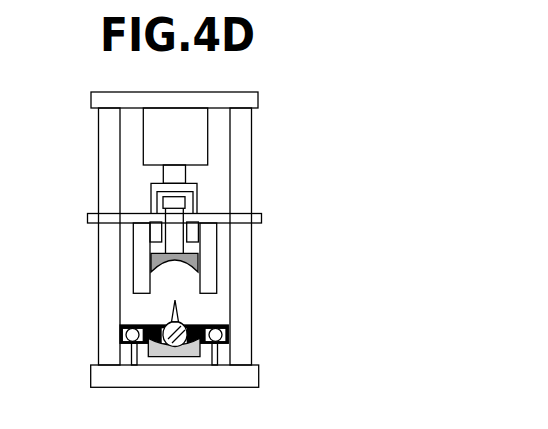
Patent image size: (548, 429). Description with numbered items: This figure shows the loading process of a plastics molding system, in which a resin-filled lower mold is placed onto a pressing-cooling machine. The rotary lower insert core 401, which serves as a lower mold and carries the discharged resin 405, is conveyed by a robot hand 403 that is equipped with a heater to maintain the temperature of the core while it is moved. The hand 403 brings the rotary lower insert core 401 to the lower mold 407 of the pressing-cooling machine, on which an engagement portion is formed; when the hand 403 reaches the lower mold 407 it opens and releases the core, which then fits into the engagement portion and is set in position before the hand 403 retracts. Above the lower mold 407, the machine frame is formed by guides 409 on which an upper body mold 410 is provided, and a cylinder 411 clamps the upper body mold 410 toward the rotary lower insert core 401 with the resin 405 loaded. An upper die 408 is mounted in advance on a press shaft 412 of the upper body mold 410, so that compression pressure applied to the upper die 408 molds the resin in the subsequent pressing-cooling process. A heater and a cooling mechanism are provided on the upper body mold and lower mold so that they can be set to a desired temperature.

The rotary lower insert core 401 is at (158, 345).
The hand 403 is at (225, 334).
The resin 405 is at (161, 328).
The lower mold 407 is at (203, 354).
The upper die 408 is at (192, 262).
The guides 409 is at (106, 175).
The upper body mold 410 is at (141, 278).
The cylinder 411 is at (180, 175).
The press shaft 412 is at (172, 237).